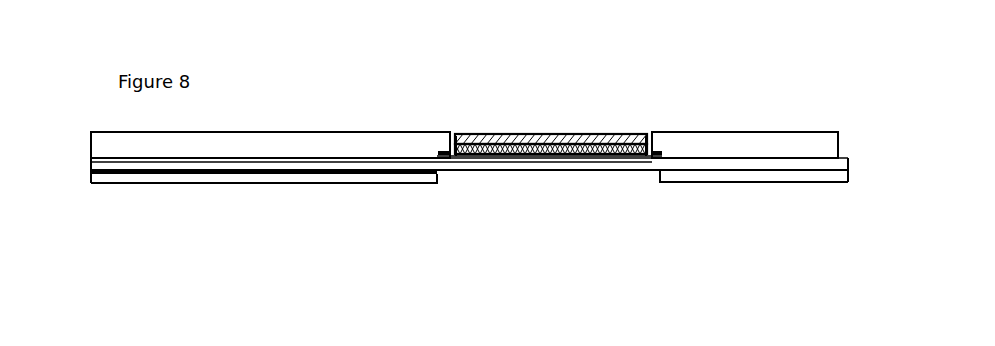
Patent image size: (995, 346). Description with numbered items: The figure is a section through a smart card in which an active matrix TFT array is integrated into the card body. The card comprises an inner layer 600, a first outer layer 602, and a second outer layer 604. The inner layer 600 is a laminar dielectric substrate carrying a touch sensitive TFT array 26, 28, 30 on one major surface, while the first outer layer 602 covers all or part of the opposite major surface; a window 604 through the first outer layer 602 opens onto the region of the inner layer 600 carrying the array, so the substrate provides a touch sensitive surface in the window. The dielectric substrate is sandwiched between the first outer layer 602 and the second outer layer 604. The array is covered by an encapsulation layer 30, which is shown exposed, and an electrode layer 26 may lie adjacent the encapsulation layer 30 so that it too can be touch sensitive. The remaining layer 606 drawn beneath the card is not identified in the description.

The inner layer 600 is at (340, 165).
The first outer layer 602 is at (203, 183).
The second outer layer 604 is at (118, 153).
The lower layer 606 is at (465, 193).
The electrode layer 26 is at (486, 155).
The TFT array layer 28 is at (583, 152).
The encapsulation layer 30 is at (545, 134).